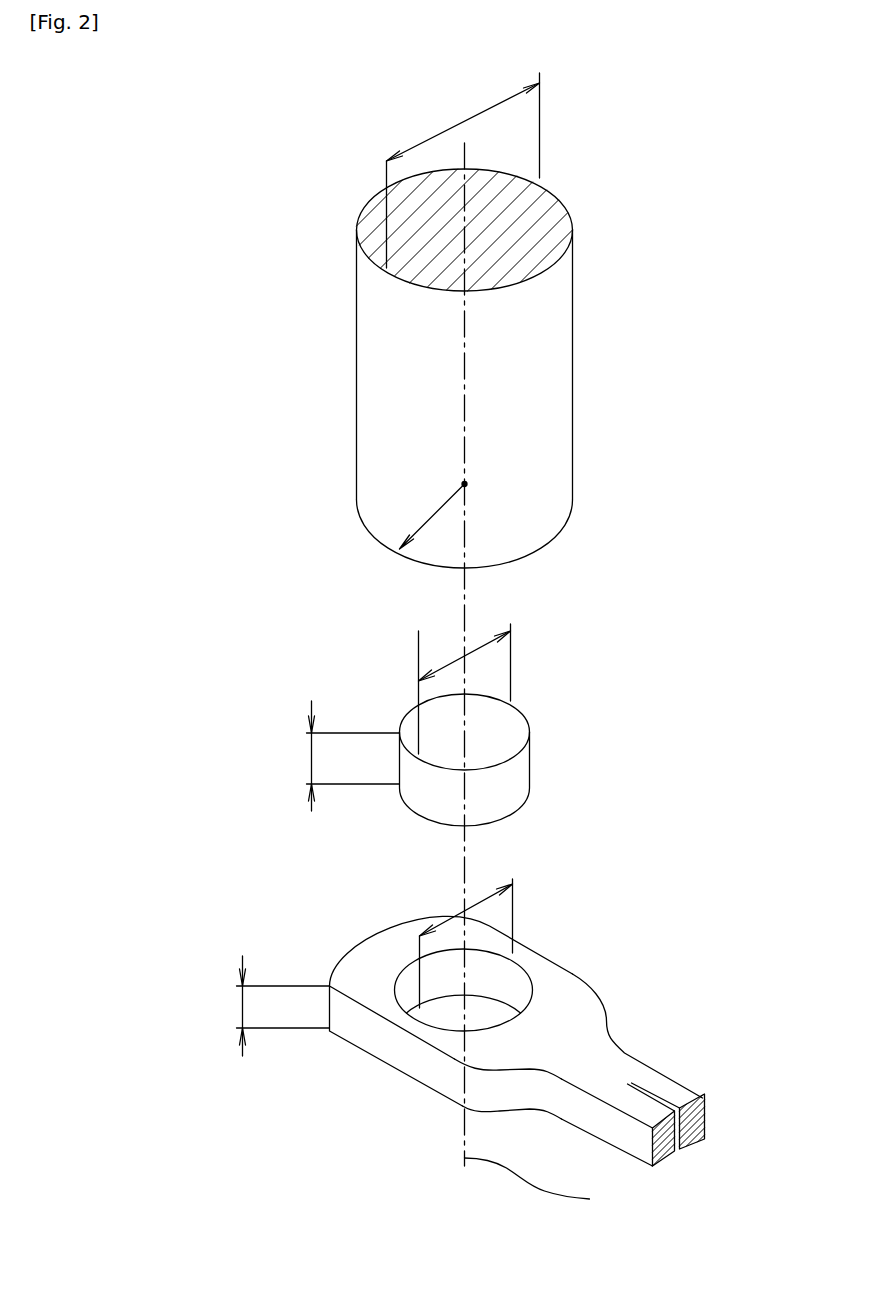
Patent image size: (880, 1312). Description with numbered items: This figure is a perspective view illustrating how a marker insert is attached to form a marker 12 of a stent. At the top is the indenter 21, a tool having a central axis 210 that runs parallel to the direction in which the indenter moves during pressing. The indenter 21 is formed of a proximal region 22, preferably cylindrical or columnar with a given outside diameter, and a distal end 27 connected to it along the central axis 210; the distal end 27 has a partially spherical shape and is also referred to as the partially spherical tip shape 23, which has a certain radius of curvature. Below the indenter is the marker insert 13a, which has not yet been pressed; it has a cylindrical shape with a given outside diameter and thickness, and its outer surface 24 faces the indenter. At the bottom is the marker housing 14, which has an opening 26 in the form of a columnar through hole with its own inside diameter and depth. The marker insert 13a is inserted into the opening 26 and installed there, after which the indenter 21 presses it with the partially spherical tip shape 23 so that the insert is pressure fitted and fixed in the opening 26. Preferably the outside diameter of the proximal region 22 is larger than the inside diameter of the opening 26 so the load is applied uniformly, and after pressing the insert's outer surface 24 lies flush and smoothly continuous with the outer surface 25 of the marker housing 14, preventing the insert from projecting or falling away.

The indenter 21 is at (441, 339).
The proximal region 22 is at (547, 333).
The partially spherical tip shape 23 is at (414, 541).
The distal end 27 is at (414, 553).
The outer surface 24 is at (510, 722).
The marker insert which has not been pressed yet 13a is at (469, 725).
The marker 12 is at (453, 1048).
The outer surface of the marker housing 25 is at (552, 992).
The opening 26 is at (413, 983).
The marker housing 14 is at (410, 1050).
The central axis 210 is at (555, 1189).